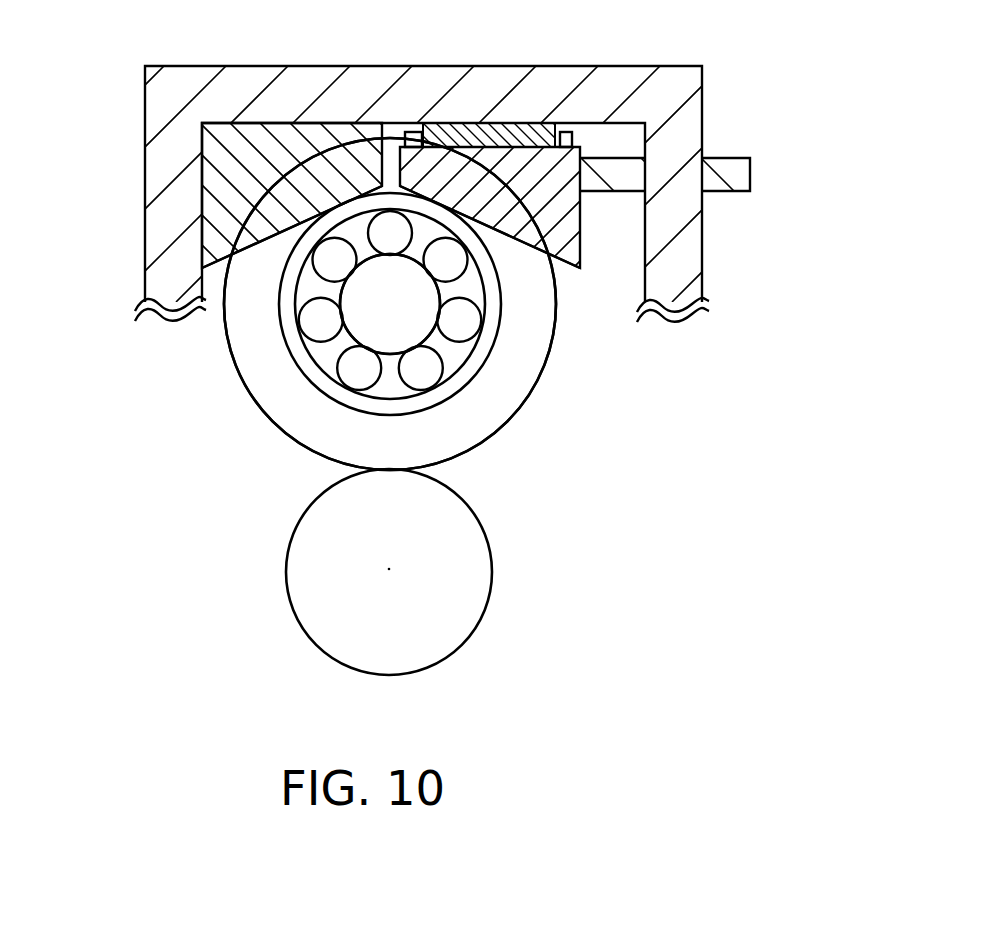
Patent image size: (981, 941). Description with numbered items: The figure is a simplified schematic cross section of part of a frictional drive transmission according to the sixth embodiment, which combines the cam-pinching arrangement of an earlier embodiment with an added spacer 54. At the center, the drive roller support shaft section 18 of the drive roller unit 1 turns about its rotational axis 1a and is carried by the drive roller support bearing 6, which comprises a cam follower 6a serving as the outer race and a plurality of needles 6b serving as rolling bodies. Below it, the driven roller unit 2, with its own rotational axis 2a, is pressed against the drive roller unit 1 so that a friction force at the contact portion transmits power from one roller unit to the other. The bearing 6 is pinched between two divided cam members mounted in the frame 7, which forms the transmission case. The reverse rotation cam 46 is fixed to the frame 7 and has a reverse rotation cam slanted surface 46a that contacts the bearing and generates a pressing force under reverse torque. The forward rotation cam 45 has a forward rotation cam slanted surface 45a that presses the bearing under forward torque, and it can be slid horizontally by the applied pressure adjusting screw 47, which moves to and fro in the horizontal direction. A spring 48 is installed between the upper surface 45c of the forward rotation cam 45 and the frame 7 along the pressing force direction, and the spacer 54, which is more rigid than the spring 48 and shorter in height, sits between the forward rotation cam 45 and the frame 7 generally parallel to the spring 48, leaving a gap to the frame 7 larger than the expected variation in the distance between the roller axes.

The drive roller unit 1 is at (540, 377).
The rotational axis of the drive roller unit 1a is at (390, 306).
The driven roller unit 2 is at (472, 630).
The rotational axis of the driven roller unit 2a is at (388, 568).
The second drive roller support bearing 6 is at (295, 388).
The cam follower 6a is at (457, 400).
The needles 6b is at (335, 376).
The frame 7 is at (683, 80).
The drive roller support shaft section 18 is at (420, 325).
The forward rotation cam 45 is at (583, 219).
The forward rotation cam slanted surface 45a is at (566, 268).
The upper surface of the forward rotation cam 45c is at (526, 126).
The reverse rotation cam 46 is at (201, 134).
The reverse rotation cam slanted surface 46a is at (222, 258).
The applied pressure adjusting screw 47 is at (727, 167).
The spring 48 is at (462, 123).
The spacer 54 is at (411, 128).